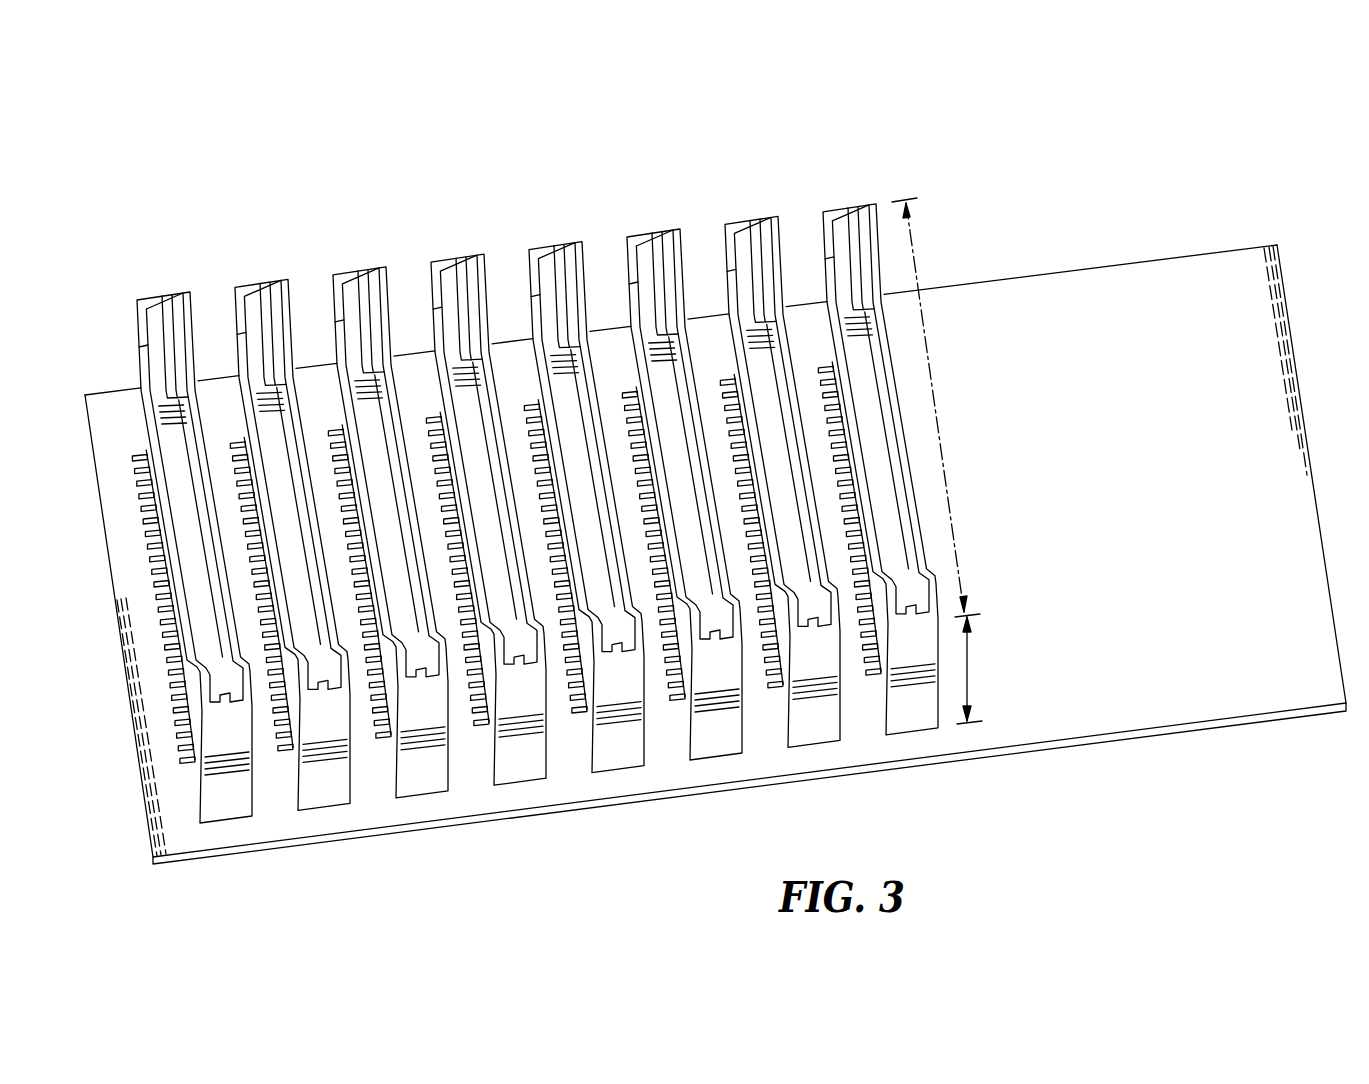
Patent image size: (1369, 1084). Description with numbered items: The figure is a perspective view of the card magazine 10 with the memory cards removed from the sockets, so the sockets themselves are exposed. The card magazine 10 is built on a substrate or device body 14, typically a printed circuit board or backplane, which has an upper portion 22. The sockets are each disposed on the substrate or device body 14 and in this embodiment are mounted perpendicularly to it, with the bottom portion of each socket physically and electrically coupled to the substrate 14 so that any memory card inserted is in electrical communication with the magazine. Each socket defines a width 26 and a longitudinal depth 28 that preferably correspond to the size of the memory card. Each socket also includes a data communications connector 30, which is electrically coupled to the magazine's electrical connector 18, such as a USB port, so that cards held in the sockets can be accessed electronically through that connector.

The card magazine 10 is at (715, 486).
The substrate or device body 14 is at (1106, 744).
The electrical connector 18 is at (678, 690).
The upper portion 22 is at (998, 298).
The width 26 is at (912, 198).
The longitudinal depth 28 is at (968, 668).
The data communications connector 30 is at (870, 277).